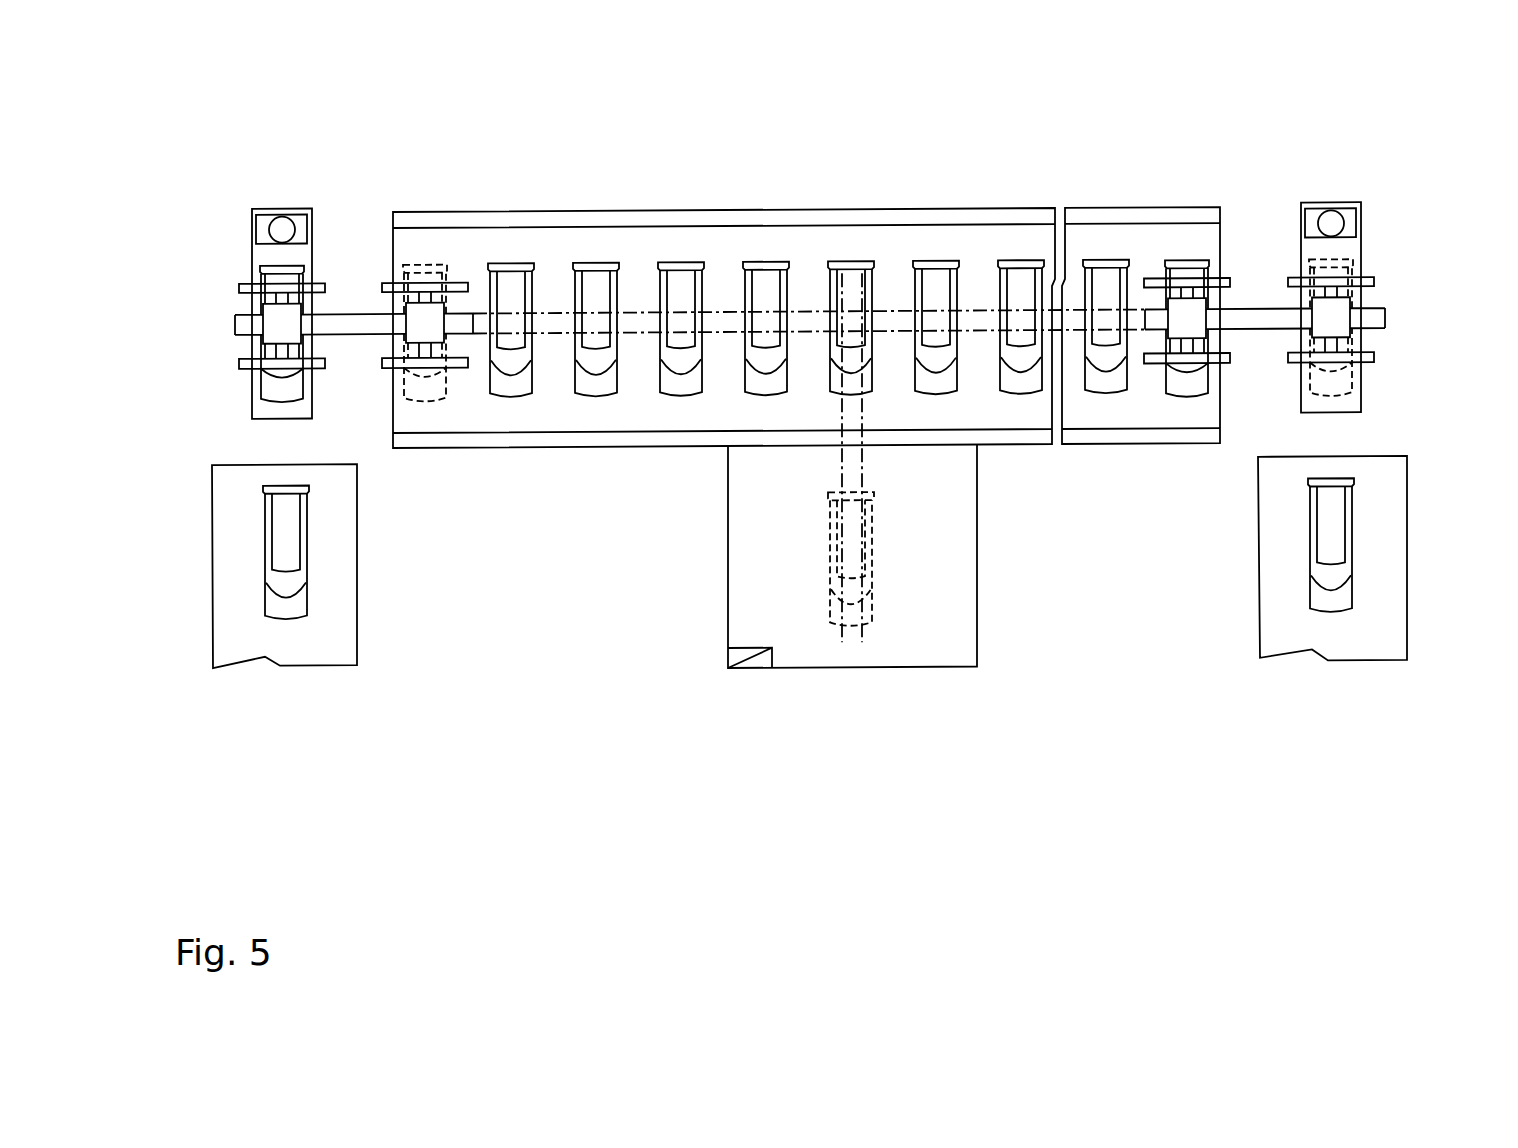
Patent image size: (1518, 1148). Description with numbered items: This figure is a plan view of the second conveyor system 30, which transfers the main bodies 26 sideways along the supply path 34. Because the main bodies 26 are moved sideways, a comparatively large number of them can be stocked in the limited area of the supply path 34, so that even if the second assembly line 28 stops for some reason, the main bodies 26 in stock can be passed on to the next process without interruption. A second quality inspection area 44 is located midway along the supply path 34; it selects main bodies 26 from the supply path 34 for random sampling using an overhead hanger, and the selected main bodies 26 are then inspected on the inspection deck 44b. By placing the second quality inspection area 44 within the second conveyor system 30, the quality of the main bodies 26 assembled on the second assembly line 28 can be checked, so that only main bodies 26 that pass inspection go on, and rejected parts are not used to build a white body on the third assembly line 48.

The main body 26 is at (923, 258).
The second assembly line 28 is at (342, 632).
The second conveyor system 30 is at (1222, 203).
The supply path 34 is at (792, 242).
The second quality inspection area 44 is at (953, 672).
The inspection deck 44b is at (965, 615).
The third assembly line 48 is at (1395, 613).